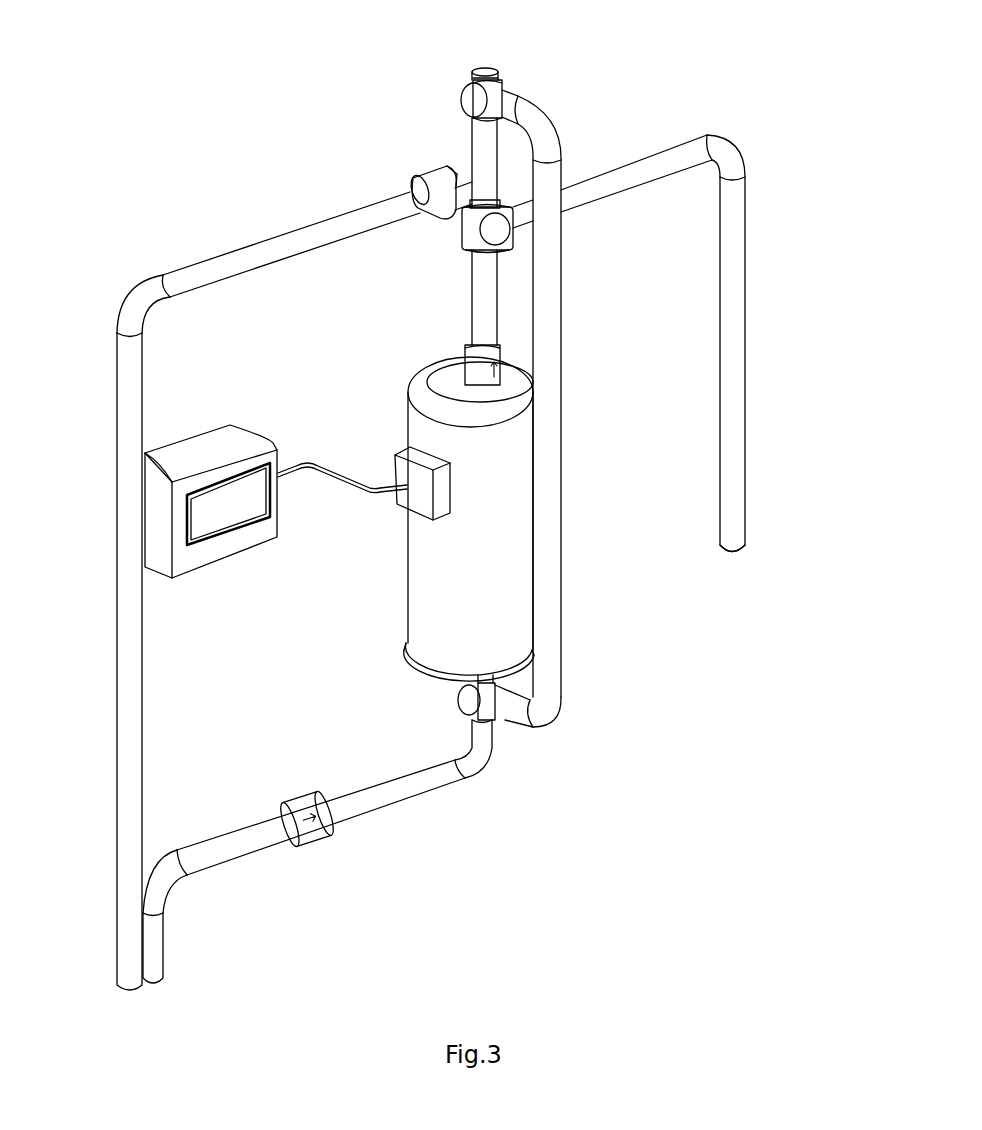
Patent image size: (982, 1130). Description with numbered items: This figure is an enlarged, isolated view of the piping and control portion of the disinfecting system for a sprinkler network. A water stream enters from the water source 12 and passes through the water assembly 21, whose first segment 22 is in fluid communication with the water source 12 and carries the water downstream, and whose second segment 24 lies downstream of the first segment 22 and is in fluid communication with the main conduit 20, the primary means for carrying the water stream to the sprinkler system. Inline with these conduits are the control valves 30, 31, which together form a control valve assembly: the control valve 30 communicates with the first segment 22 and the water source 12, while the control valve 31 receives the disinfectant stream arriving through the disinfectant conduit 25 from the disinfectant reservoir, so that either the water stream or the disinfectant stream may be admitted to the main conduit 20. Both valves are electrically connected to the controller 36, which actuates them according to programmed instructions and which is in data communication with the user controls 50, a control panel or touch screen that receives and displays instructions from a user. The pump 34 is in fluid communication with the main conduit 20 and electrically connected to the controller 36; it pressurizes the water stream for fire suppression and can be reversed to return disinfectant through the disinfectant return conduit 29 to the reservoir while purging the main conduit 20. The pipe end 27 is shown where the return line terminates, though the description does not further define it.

The water source 12 is at (731, 555).
The main conduit 20 is at (490, 80).
The water assembly 21 is at (770, 218).
The first segment 22 is at (735, 388).
The second segment 24 is at (483, 195).
The disinfectant conduit 25 is at (375, 828).
The pipe end 27 is at (150, 965).
The disinfectant return conduit 29 is at (130, 795).
The control valve 30 is at (493, 230).
The control valve 31 is at (473, 95).
The pump 34 is at (438, 603).
The controller 36 is at (211, 509).
The user controls 50 is at (218, 517).